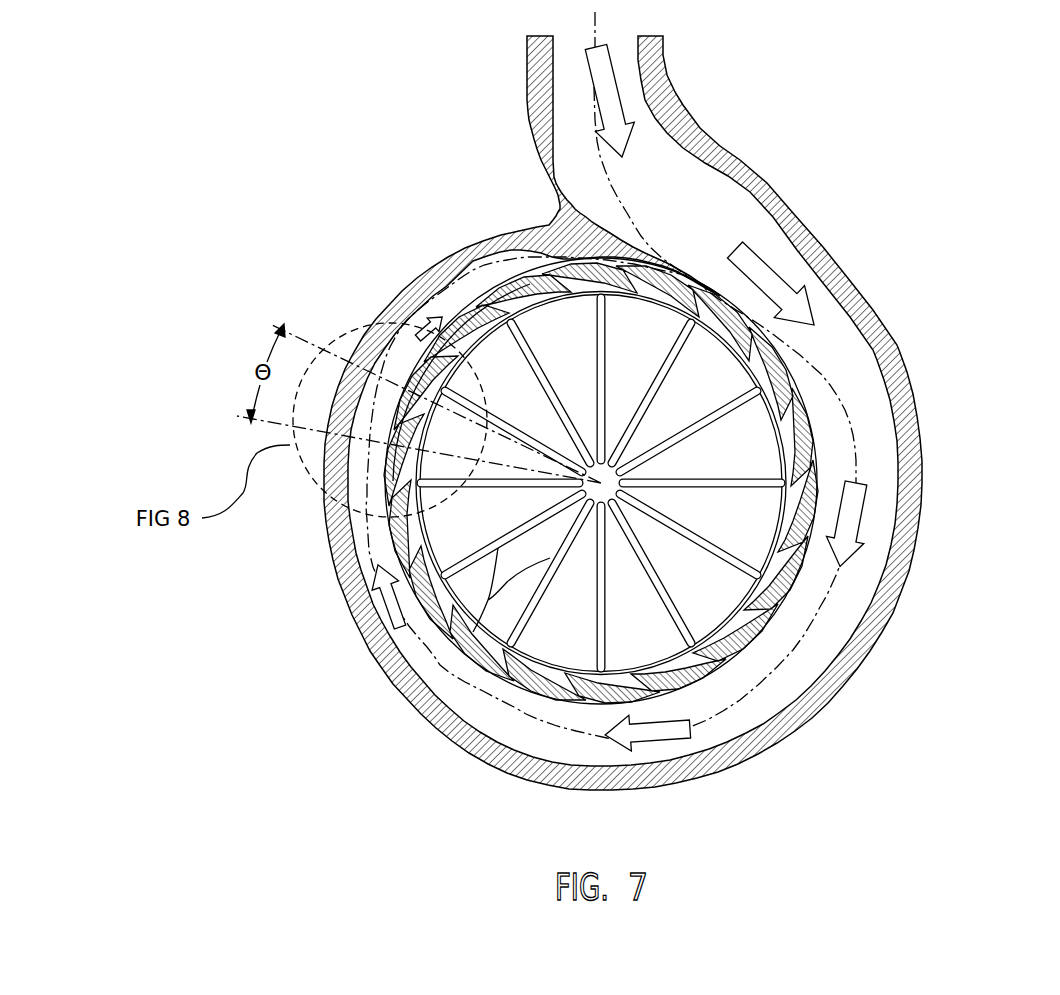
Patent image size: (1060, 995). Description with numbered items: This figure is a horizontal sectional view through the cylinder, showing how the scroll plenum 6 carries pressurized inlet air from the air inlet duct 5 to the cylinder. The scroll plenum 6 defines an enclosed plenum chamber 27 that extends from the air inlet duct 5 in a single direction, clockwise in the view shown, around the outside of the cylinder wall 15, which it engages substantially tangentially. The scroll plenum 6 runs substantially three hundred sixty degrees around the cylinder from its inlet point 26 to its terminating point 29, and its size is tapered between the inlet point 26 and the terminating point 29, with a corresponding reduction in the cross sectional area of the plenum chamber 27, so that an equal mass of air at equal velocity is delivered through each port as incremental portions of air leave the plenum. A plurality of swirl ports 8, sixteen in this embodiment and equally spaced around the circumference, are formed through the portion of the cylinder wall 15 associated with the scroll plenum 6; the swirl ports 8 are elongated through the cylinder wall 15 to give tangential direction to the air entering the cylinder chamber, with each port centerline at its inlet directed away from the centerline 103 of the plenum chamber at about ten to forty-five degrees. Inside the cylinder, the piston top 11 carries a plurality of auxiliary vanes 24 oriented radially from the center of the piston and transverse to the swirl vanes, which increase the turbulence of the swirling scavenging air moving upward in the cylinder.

The air inlet duct 5 is at (667, 78).
The centerline of the plenum chamber 103 is at (728, 170).
The inlet point 26 is at (735, 215).
The terminating point 29 is at (703, 285).
The cylinder wall 15 is at (813, 470).
The piston top 11 is at (646, 352).
The plenum chamber 27 is at (853, 583).
The swirl ports 8 is at (757, 630).
The scroll plenum 6 is at (825, 705).
The auxiliary vanes 24 is at (410, 698).